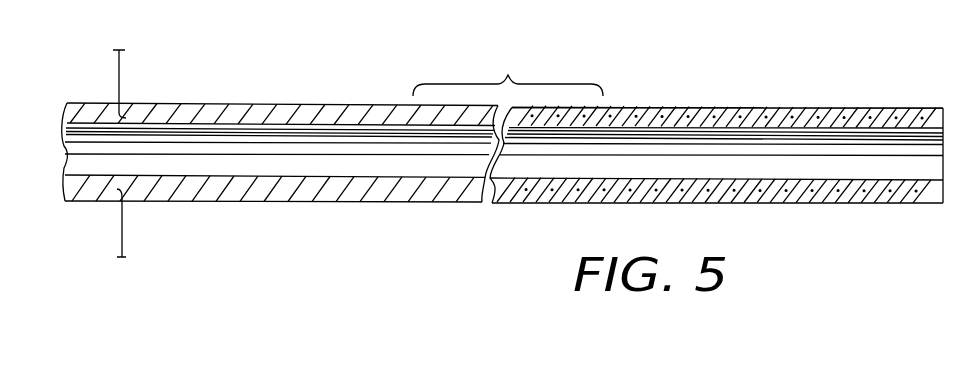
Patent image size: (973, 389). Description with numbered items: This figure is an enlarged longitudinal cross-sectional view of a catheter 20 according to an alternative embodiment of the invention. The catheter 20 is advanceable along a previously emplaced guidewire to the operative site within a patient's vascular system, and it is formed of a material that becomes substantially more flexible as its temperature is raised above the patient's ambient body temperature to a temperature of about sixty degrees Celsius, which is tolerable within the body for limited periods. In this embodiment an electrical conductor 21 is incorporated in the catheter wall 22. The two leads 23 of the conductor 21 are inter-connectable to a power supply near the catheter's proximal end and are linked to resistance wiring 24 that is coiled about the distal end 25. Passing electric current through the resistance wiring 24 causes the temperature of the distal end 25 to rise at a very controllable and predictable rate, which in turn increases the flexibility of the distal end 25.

The catheter 20 is at (521, 60).
The electrical conductor 21 is at (320, 108).
The catheter wall 22 is at (215, 117).
The leads 23 is at (122, 83).
The resistance wiring 24 is at (787, 118).
The distal end 25 is at (882, 108).